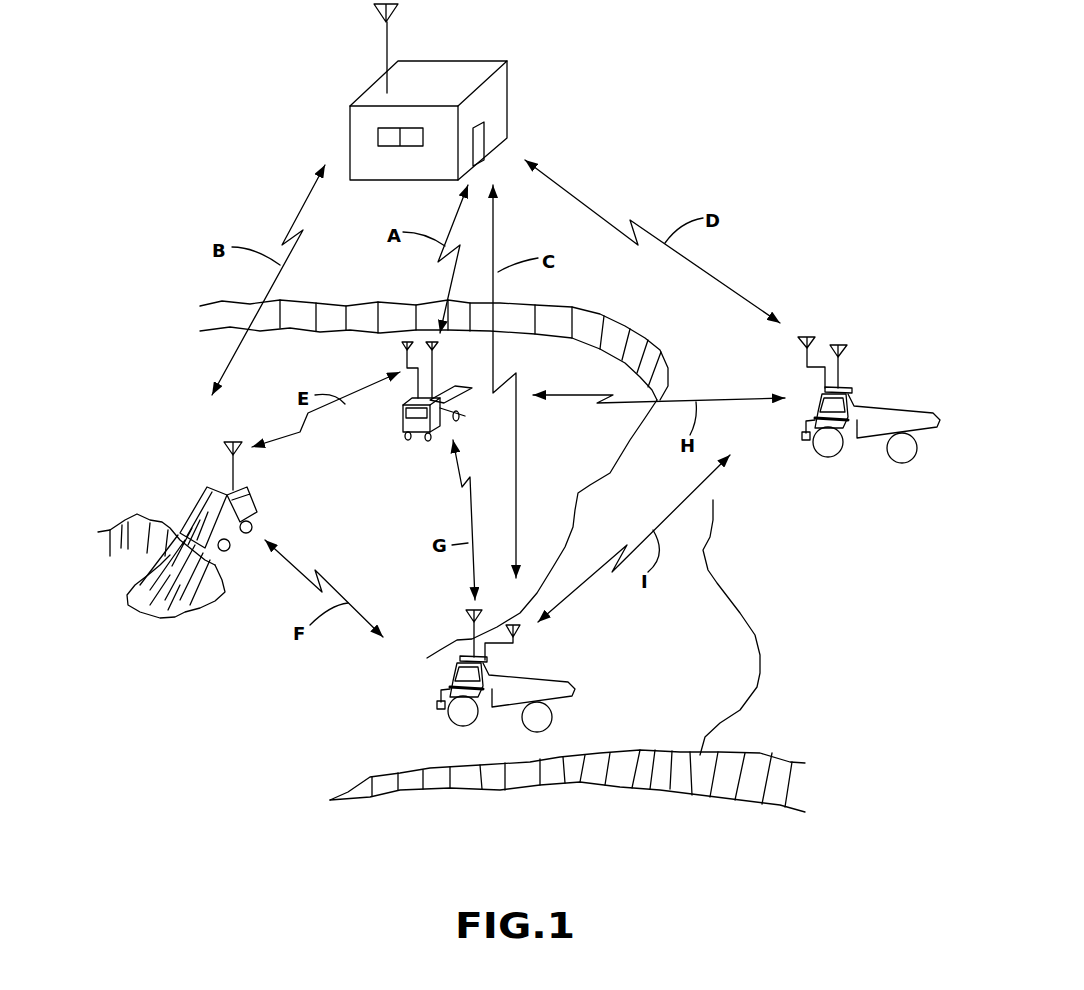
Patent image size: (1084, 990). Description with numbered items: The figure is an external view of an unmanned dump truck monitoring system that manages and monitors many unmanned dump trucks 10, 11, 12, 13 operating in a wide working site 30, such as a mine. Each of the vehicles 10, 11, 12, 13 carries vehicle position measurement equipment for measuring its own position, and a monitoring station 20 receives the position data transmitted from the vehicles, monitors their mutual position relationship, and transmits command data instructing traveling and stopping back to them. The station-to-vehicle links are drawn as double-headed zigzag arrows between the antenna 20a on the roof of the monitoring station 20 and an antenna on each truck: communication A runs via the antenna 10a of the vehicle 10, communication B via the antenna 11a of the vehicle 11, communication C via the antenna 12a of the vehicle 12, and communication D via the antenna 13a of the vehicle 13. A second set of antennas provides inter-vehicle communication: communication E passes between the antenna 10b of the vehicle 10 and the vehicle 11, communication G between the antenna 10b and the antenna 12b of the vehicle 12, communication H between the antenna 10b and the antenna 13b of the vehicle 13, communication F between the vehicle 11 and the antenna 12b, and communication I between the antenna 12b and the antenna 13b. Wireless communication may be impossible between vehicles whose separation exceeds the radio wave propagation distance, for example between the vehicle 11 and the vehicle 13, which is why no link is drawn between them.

The unmanned dump truck 10 is at (392, 424).
The antenna 10a is at (434, 370).
The antenna 10b is at (405, 358).
The unmanned dump truck 11 is at (245, 490).
The antenna 11a is at (228, 466).
The unmanned dump truck 12 is at (535, 680).
The antenna 12a is at (468, 625).
The antenna 12b is at (520, 637).
The unmanned dump truck 13 is at (898, 403).
The antenna 13a is at (843, 362).
The antenna 13b is at (797, 362).
The monitoring station 20 is at (507, 62).
The antenna 20a is at (380, 32).
The working site 30 is at (733, 126).